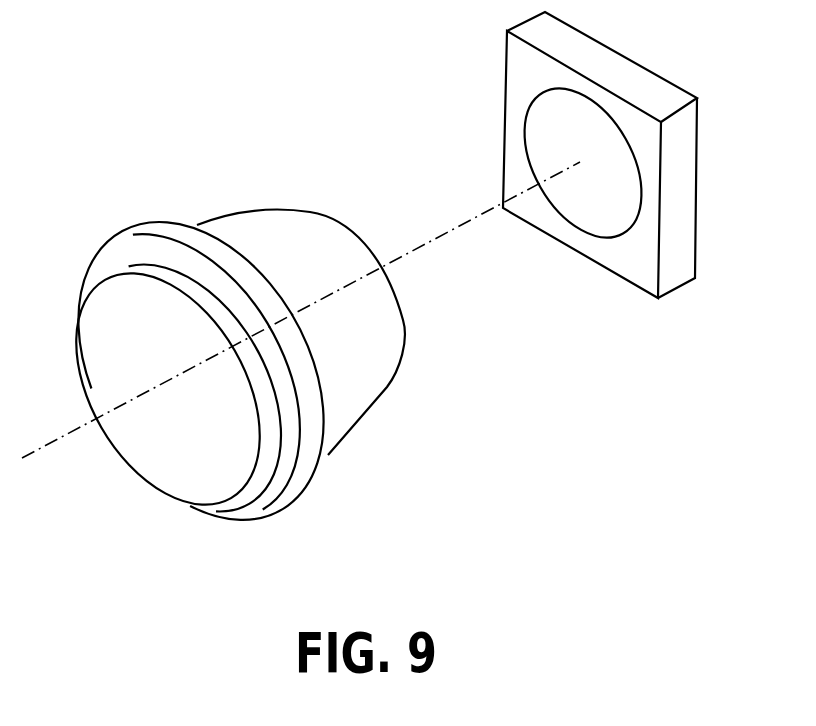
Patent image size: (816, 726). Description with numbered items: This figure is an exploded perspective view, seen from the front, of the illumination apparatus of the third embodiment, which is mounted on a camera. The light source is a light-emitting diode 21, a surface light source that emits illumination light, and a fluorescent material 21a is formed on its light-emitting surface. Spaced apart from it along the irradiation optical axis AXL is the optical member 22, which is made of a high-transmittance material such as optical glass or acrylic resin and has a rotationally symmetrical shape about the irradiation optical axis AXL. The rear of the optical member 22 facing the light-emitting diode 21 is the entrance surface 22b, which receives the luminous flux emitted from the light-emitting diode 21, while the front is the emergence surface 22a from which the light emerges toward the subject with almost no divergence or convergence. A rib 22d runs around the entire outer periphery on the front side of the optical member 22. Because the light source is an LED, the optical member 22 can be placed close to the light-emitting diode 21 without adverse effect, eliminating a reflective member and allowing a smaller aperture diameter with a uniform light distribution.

The light-emitting diode (LED) 21 is at (637, 198).
The fluorescent material 21a is at (618, 182).
The optical member 22 is at (291, 349).
The emergence surface 22a is at (193, 470).
The entrance surface 22b is at (403, 323).
The rib 22d is at (157, 229).
The irradiation optical axis AXL is at (62, 446).